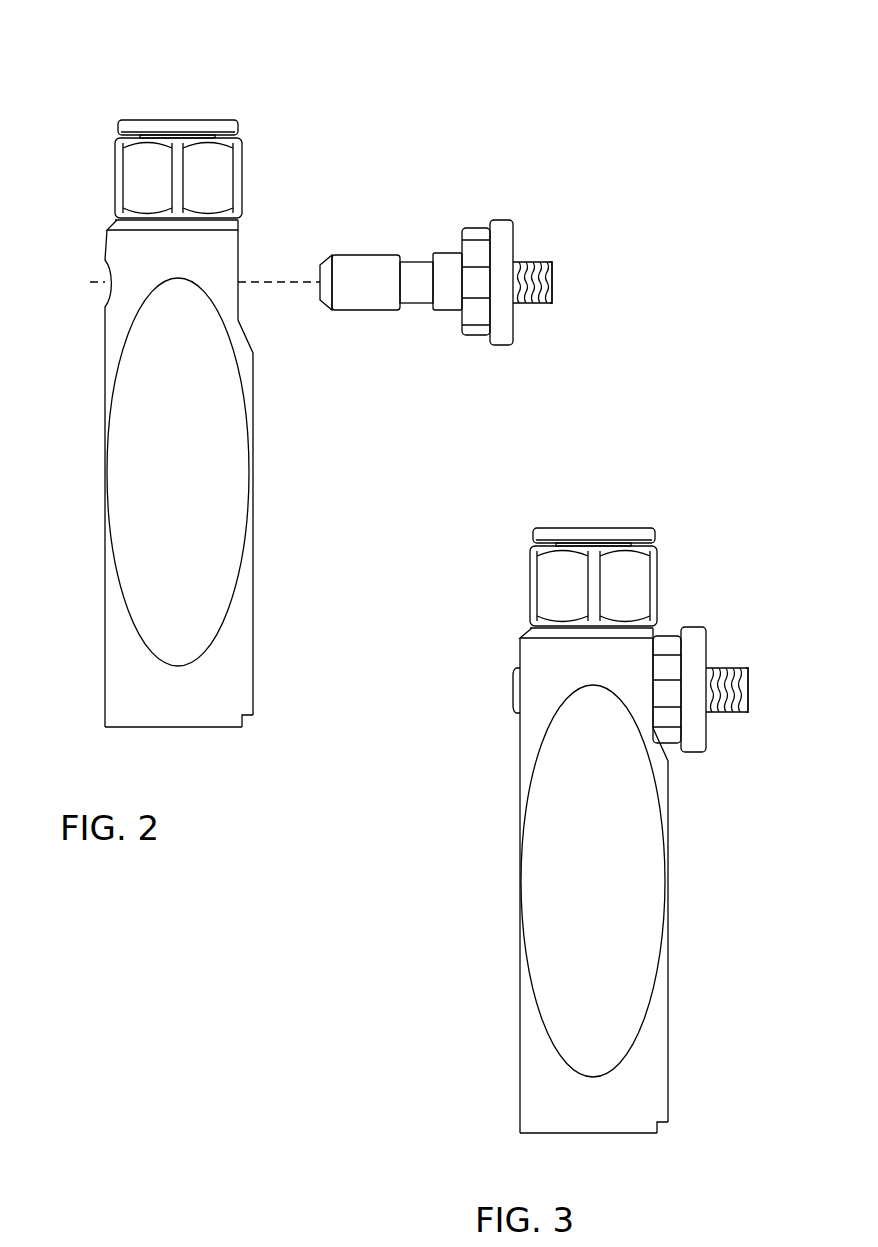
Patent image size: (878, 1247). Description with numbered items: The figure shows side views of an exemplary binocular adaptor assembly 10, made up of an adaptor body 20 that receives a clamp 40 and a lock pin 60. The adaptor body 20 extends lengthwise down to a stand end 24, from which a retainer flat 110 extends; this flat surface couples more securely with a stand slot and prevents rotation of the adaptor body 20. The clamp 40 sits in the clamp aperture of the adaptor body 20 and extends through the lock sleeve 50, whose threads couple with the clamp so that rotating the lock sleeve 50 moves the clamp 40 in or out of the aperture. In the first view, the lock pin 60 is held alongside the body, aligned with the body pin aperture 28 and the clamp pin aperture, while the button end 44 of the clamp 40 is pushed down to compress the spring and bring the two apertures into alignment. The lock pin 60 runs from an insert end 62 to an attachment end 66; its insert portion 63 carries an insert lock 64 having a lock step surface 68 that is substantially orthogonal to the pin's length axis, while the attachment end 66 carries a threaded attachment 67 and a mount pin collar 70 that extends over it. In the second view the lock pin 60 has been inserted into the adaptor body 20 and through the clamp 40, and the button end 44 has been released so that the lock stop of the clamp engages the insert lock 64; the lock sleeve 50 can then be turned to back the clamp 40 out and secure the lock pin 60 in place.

In FIG. 2, the binocular adaptor assembly 10 is at (507, 139).
In FIG. 3, the binocular adaptor assembly 10 is at (756, 464).
In FIG. 2, the adaptor body 20 is at (225, 480).
In FIG. 3, the adaptor body 20 is at (643, 897).
In FIG. 2, the stand end 24 is at (217, 730).
In FIG. 3, the stand end 24 is at (603, 1137).
In FIG. 2, the body pin aperture 28 is at (110, 283).
In FIG. 3, the body pin aperture 28 is at (520, 663).
In FIG. 2, the clamp 40 is at (208, 198).
In FIG. 3, the clamp 40 is at (615, 598).
In FIG. 2, the button end 44 is at (183, 120).
In FIG. 3, the button end 44 is at (603, 528).
In FIG. 2, the lock sleeve 50 is at (210, 165).
In FIG. 3, the lock sleeve 50 is at (615, 565).
In FIG. 2, the lock pin 60 is at (385, 297).
In FIG. 3, the lock pin 60 is at (670, 735).
In FIG. 2, the insert end 62 is at (318, 290).
In FIG. 3, the insert end 62 is at (512, 687).
In FIG. 2, the insert portion 63 is at (352, 282).
In FIG. 2, the insert lock 64 is at (430, 253).
In FIG. 2, the attachment end 66 is at (553, 270).
In FIG. 3, the attachment end 66 is at (748, 692).
In FIG. 2, the threaded attachment 67 is at (553, 303).
In FIG. 3, the threaded attachment 67 is at (737, 670).
In FIG. 2, the lock step surface 68 is at (415, 268).
In FIG. 2, the mount pin collar 70 is at (500, 238).
In FIG. 3, the mount pin collar 70 is at (690, 643).
In FIG. 2, the retainer flat 110 is at (247, 718).
In FIG. 3, the retainer flat 110 is at (660, 1127).